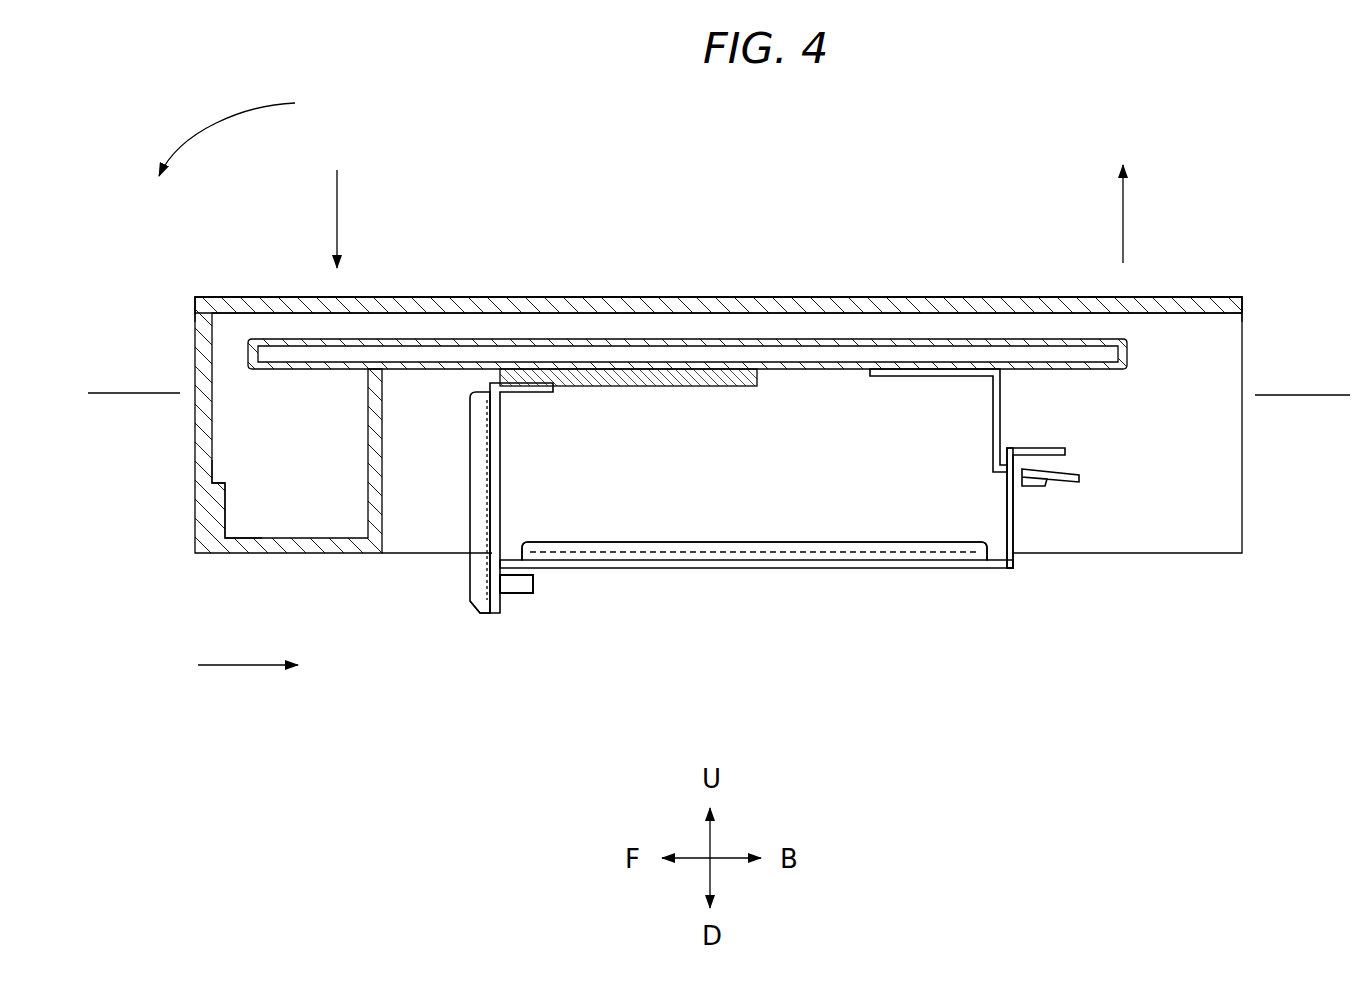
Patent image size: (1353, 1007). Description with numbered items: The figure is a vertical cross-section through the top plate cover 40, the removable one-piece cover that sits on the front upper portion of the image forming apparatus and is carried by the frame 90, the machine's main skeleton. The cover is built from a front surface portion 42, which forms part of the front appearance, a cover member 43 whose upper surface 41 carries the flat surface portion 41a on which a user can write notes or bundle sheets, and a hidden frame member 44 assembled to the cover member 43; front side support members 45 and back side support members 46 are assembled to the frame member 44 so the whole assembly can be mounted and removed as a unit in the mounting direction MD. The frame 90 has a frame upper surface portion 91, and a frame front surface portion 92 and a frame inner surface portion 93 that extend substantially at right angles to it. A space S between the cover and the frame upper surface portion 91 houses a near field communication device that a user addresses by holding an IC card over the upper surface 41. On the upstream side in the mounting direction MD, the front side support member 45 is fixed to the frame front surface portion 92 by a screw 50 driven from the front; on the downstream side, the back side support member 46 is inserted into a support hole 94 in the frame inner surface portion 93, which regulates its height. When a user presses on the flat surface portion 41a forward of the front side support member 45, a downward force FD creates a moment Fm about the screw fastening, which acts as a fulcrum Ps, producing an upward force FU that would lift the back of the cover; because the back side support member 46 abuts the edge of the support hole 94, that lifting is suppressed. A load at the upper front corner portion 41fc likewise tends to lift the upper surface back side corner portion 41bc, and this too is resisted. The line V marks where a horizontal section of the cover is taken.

The top plate cover 40 is at (727, 168).
The upper surface 41 is at (474, 280).
The flat surface portion 41a is at (405, 297).
The upper front corner portion 41fc is at (213, 282).
The upper surface back side corner portion 41bc is at (1222, 282).
The front surface portion 42 is at (195, 460).
The cover member 43 is at (565, 297).
The frame member 44 is at (970, 339).
The front side support member 45 is at (478, 515).
The back side support member 46 is at (1070, 466).
The screw 50 is at (463, 583).
The frame 90 is at (708, 568).
The frame upper surface portion 91 is at (750, 542).
The frame front surface portion 92 is at (500, 600).
The frame inner surface portion 93 is at (1010, 530).
The support hole 94 is at (1008, 470).
The space S is at (797, 460).
The fulcrum Ps is at (473, 588).
The moment Fm is at (252, 103).
The downward force FD is at (335, 236).
The upward force FU is at (1121, 211).
The mounting direction MD is at (250, 660).
The line V is at (112, 383).